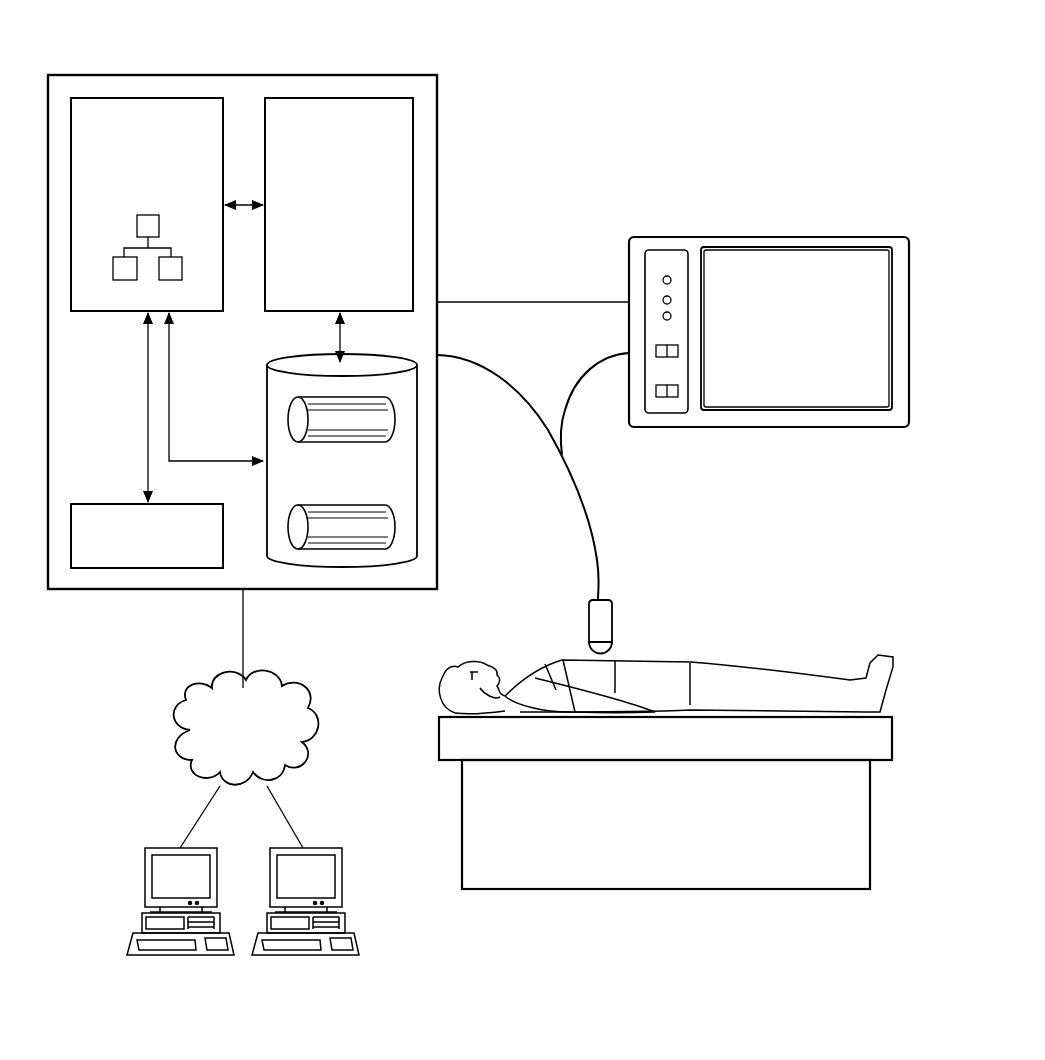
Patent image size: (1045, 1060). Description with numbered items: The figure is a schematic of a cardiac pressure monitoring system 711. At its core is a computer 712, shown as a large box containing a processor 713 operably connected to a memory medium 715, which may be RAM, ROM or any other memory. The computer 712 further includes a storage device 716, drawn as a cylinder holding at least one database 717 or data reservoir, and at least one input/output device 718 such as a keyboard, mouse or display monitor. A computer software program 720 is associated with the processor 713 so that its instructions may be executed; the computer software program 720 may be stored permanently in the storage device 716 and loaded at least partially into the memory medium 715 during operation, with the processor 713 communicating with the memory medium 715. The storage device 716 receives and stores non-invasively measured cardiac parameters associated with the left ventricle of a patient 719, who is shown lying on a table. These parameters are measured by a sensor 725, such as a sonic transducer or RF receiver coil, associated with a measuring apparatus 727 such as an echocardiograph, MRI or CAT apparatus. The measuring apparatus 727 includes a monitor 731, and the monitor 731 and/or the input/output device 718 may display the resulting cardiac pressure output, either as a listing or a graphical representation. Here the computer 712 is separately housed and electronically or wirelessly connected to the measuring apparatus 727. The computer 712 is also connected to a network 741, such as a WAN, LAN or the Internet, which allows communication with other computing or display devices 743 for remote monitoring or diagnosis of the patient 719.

The cardiac pressure monitoring system 711 is at (699, 117).
The computer 712 is at (230, 72).
The processor 713 is at (113, 312).
The memory medium 715 is at (113, 503).
The storage device 716 is at (262, 405).
The database 717 is at (328, 444).
The input/output device 718 is at (356, 238).
The patient 719 is at (670, 662).
The computer software program 720 is at (121, 210).
The sensor 725 is at (588, 625).
The measuring apparatus 727 is at (768, 236).
The monitor 731 is at (776, 337).
The network 741 is at (224, 747).
The computing or display devices 743 is at (180, 956).